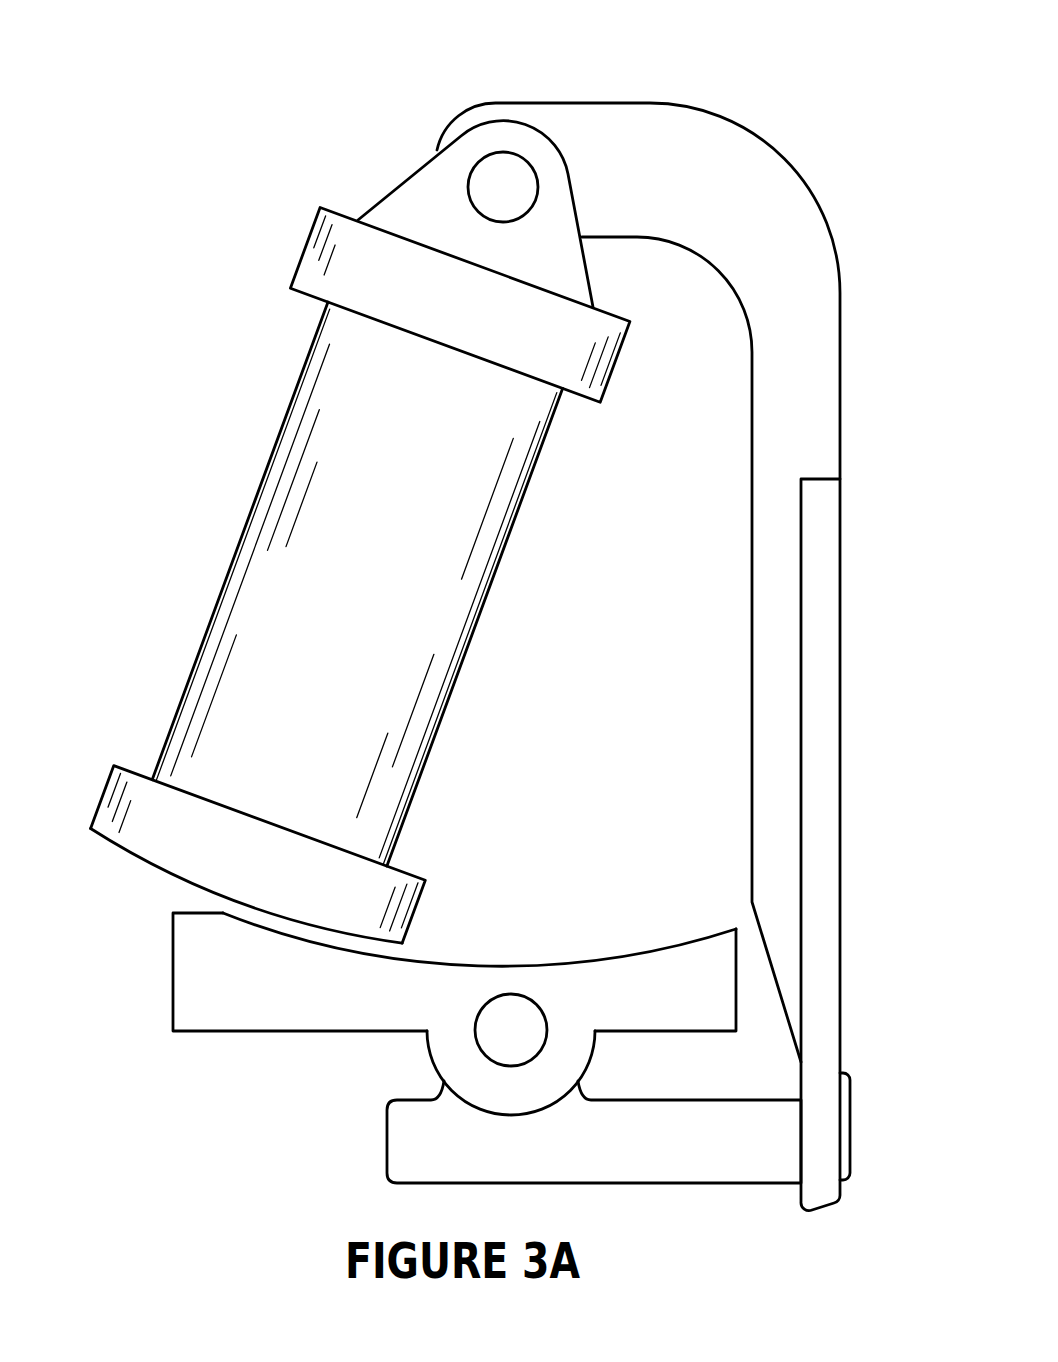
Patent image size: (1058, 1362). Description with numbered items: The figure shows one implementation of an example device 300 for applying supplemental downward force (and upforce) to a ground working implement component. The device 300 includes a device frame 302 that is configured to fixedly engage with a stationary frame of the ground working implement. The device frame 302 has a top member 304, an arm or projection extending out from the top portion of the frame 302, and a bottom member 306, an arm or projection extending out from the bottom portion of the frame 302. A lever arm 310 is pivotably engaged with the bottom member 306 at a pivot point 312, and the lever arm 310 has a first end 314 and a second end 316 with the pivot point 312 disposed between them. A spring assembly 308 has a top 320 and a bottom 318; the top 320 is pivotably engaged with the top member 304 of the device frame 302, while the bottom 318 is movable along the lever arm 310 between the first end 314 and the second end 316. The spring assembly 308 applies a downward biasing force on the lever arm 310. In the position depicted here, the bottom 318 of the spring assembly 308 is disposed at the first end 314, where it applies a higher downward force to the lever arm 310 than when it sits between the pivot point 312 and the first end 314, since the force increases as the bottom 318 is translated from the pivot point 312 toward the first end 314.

The example device 300 is at (137, 56).
The device frame 302 is at (862, 624).
The top member 304 is at (568, 124).
The bottom member 306 is at (402, 1162).
The spring assembly 308 is at (232, 478).
The lever arm 310 is at (486, 935).
The pivot point 312 is at (495, 1045).
The first end 314 is at (187, 938).
The second end 316 is at (703, 958).
The bottom 318 is at (112, 874).
The top 320 is at (418, 122).